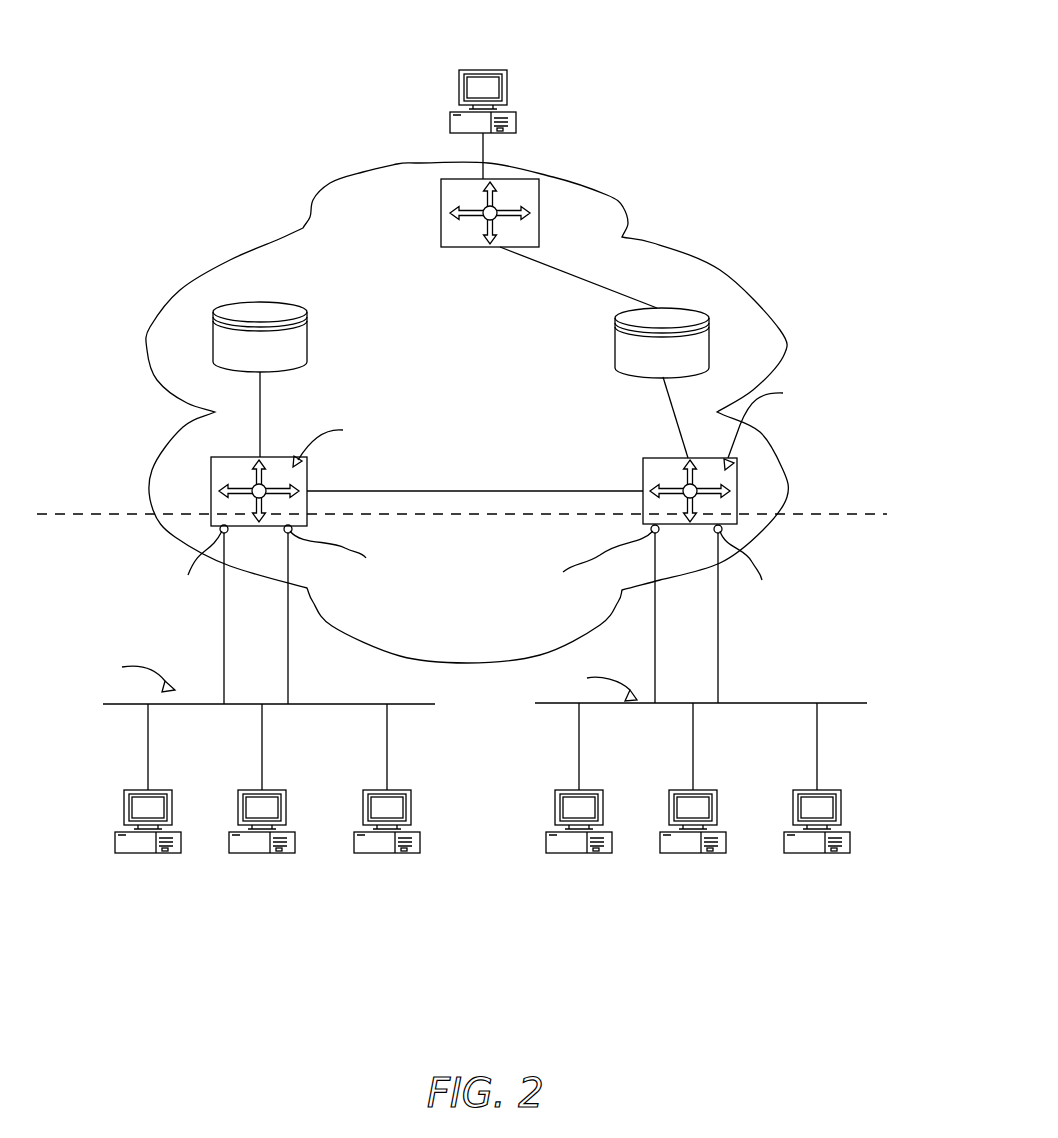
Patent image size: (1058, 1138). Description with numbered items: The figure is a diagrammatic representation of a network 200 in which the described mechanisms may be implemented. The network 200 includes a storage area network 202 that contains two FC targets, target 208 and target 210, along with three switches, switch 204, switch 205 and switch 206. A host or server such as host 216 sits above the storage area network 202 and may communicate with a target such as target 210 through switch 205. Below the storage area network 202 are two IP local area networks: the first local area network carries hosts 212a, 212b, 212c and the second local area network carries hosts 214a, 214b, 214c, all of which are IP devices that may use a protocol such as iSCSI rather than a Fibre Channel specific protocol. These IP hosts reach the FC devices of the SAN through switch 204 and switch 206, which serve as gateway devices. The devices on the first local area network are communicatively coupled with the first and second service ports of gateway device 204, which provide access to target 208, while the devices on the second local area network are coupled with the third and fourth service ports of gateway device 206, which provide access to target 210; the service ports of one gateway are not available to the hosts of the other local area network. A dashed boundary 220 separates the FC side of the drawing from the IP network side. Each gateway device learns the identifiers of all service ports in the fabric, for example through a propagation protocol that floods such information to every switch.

The network 200 is at (680, 28).
The storage area network 202 is at (363, 172).
The switch 204 is at (211, 458).
The switch 205 is at (441, 212).
The switch 206 is at (647, 464).
The target 208 is at (307, 337).
The target 210 is at (615, 340).
The host 212a is at (117, 832).
The host 212b is at (231, 832).
The host 212c is at (356, 832).
The host 214a is at (548, 832).
The host 214b is at (662, 832).
The host 214c is at (786, 832).
The host 216 is at (452, 113).
The FC / IP network boundary 220 is at (113, 513).